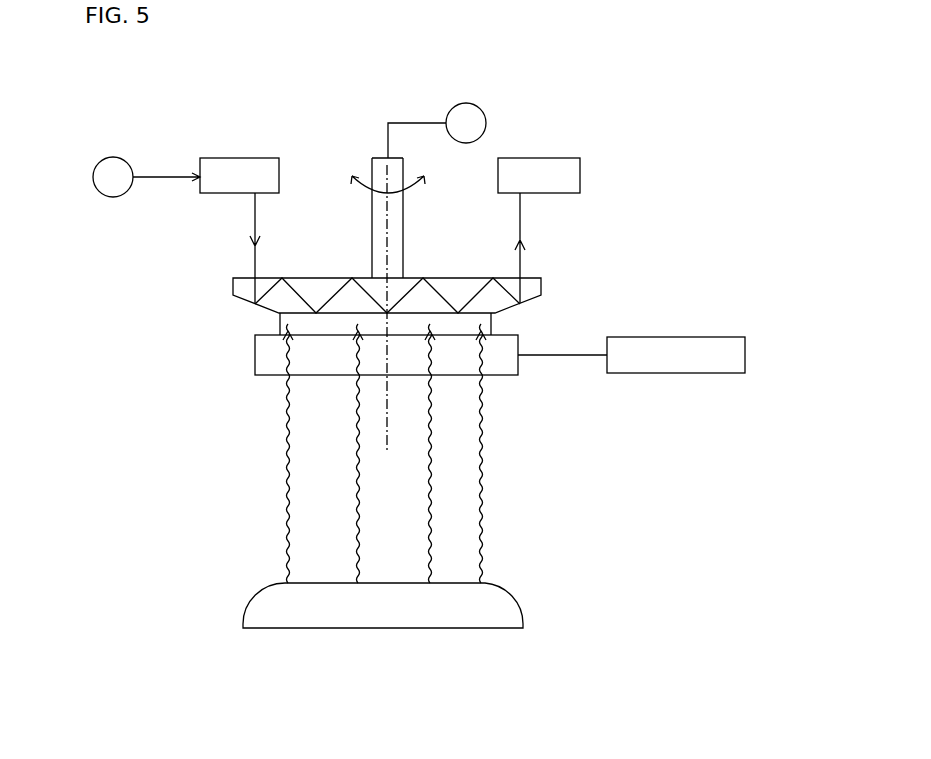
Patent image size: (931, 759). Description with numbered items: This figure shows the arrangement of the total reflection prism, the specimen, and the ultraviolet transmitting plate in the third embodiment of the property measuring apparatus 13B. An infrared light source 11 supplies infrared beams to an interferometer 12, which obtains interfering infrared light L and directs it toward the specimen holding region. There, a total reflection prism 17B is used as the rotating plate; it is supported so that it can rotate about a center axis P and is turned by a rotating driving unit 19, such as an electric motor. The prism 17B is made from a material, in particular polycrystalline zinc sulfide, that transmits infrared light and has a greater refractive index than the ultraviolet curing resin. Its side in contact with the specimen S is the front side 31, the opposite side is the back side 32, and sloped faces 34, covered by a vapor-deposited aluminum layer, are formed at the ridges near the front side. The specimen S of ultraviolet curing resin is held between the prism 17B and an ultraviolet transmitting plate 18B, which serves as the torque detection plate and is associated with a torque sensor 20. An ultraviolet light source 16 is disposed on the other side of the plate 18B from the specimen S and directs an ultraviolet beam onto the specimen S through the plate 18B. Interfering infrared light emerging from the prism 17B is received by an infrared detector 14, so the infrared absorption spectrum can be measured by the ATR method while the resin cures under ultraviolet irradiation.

The infrared light source 11 is at (107, 156).
The interferometer 12 is at (240, 158).
The infrared light L is at (252, 263).
The rotating driving unit 19 is at (466, 103).
The center axis P is at (390, 215).
The infrared detector 14 is at (580, 176).
The measuring apparatus 13B is at (716, 101).
The back side 32 is at (463, 278).
The total reflection prism 17B is at (528, 283).
The sloped faces 34 is at (251, 304).
The specimen S is at (278, 327).
The front side 31 is at (470, 316).
The ultraviolet transmitting plate 18B is at (500, 374).
The torque sensor 20 is at (625, 373).
The ultraviolet light source 16 is at (383, 630).